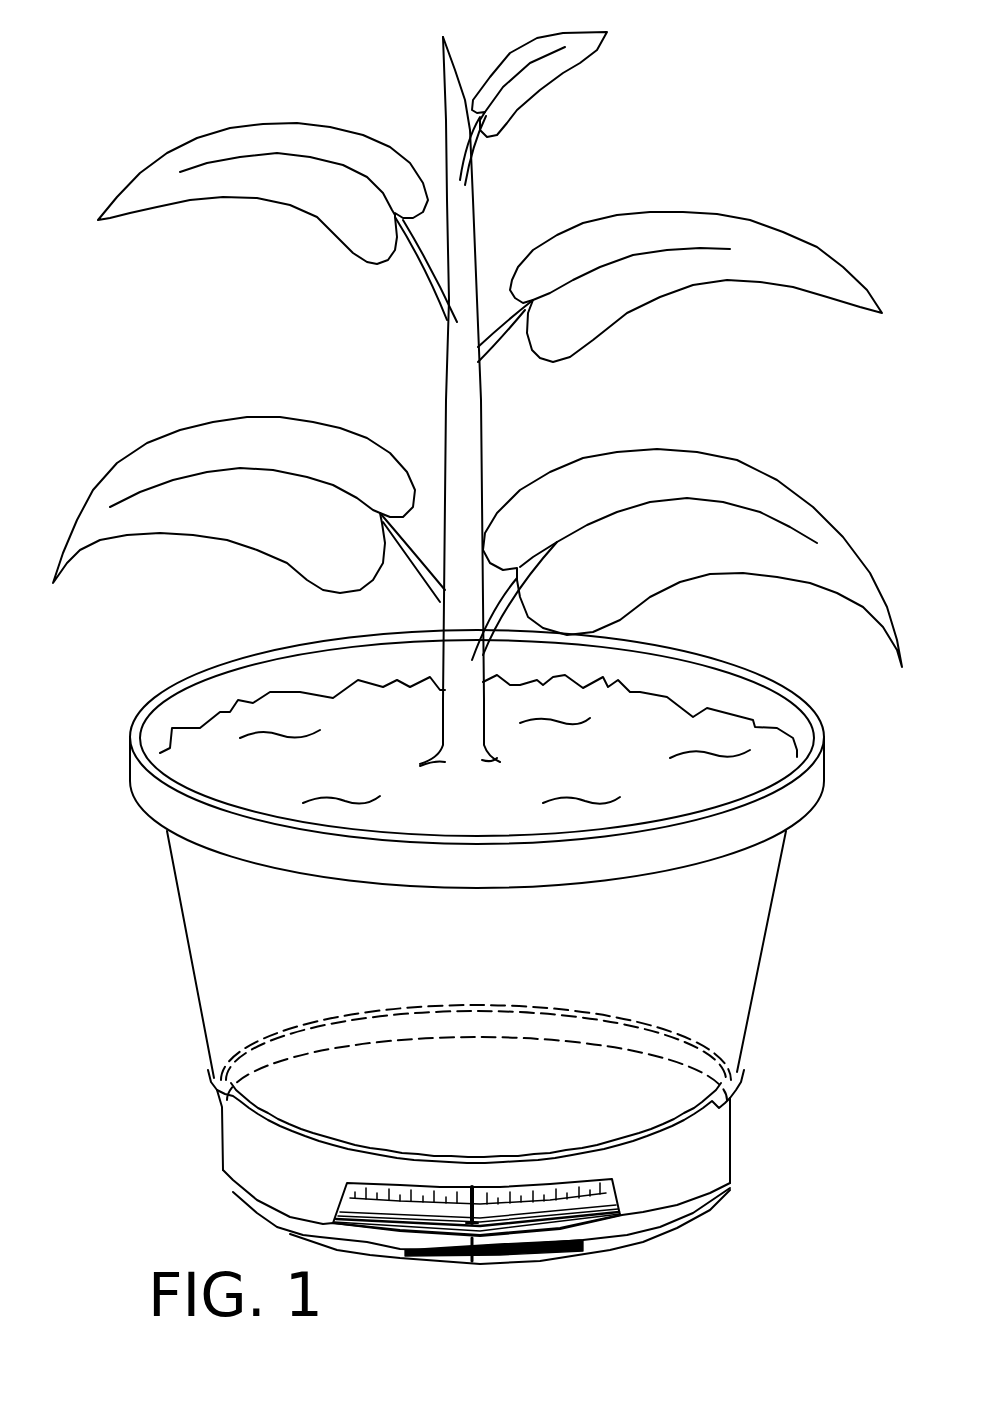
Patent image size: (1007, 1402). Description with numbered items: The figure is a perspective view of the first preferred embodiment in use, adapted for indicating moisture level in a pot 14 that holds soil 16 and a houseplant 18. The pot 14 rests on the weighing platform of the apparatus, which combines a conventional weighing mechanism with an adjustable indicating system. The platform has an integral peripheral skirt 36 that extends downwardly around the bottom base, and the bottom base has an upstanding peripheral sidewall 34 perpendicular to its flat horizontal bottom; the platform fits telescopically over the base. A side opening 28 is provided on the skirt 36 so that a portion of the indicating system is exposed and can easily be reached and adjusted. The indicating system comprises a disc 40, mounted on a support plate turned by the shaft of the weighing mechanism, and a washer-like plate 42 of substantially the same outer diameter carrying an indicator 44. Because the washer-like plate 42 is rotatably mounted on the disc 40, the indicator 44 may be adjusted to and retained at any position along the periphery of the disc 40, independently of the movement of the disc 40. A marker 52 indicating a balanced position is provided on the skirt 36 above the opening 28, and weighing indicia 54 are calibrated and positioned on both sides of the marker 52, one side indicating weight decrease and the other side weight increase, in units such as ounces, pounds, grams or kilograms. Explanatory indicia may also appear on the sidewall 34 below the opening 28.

The pot 14 is at (252, 1008).
The soil 16 is at (335, 717).
The houseplant 18 is at (455, 410).
The side opening 28 is at (333, 1223).
The peripheral sidewall 34 is at (658, 1225).
The peripheral skirt 36 is at (240, 1165).
The disc 40 is at (717, 1193).
The washer-like plate 42 is at (603, 1207).
The indicator 44 is at (482, 1227).
The marker 52 is at (480, 1197).
The weighing indicia 54 is at (400, 1197).